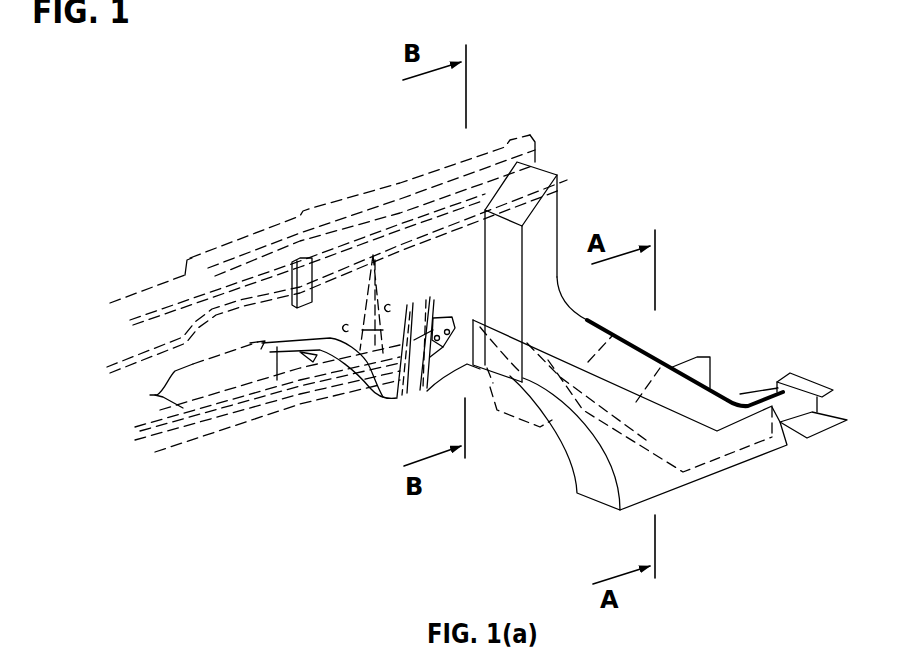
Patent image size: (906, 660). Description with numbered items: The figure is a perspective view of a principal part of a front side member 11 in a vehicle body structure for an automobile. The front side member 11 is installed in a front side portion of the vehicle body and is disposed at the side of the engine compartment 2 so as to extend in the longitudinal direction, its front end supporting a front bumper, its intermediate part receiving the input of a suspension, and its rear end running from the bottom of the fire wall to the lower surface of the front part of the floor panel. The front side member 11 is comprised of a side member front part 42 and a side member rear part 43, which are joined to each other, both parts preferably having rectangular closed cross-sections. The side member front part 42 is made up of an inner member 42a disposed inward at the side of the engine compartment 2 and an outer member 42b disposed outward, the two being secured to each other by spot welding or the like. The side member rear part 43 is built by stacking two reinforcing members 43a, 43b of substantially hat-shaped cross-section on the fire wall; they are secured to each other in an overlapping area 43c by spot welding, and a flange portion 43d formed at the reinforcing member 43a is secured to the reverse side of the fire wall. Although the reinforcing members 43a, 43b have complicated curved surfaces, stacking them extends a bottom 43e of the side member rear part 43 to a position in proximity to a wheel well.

The engine compartment 2 is at (221, 141).
The front side member 11 is at (248, 212).
The side member front part 42 is at (366, 206).
The inner member 42a is at (216, 246).
The outer member 42b is at (206, 423).
The side member rear part 43 is at (636, 303).
The reinforcing member 43a is at (545, 231).
The reinforcing member 43b is at (689, 482).
The overlapping area 43c is at (634, 396).
The flange portion 43d is at (709, 356).
The bottom 43e is at (580, 466).